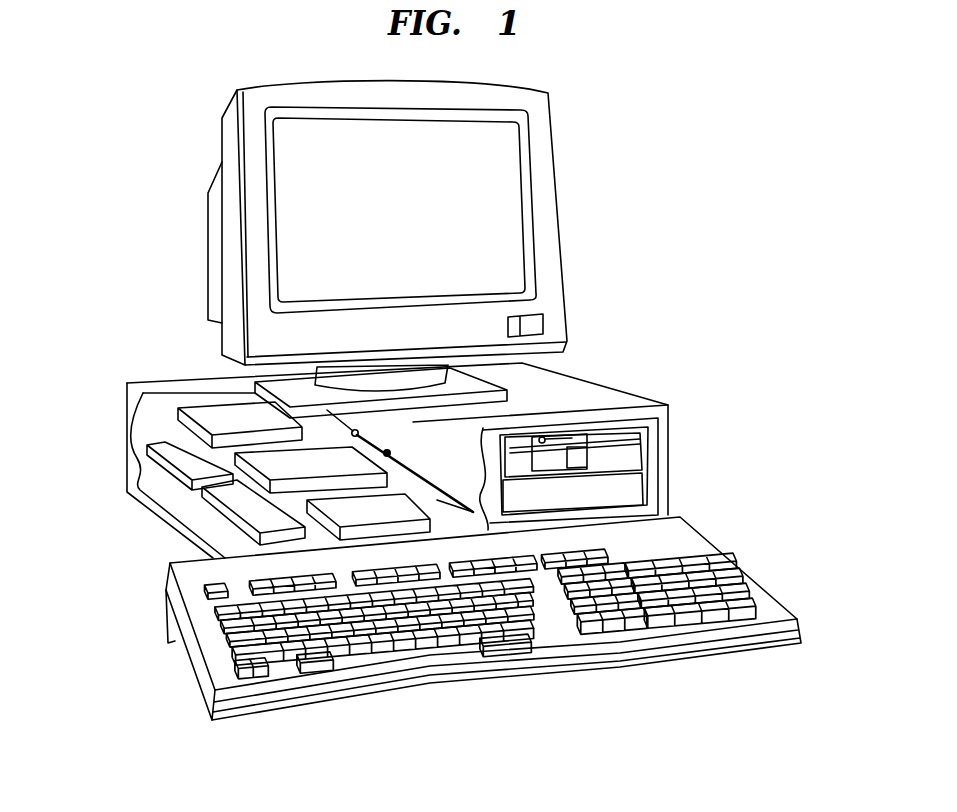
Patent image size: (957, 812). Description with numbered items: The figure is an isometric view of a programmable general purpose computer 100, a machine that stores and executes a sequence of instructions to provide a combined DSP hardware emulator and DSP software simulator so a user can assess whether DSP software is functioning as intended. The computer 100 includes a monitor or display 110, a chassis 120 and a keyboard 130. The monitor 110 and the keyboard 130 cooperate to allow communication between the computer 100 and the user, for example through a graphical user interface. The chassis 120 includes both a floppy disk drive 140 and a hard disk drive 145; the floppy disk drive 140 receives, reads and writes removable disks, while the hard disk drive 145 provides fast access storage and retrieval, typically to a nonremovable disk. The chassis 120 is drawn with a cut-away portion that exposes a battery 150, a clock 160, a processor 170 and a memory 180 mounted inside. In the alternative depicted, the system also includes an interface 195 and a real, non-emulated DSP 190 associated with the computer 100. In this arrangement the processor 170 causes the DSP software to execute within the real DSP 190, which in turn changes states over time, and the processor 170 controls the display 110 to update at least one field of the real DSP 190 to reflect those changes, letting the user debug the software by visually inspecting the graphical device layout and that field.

The programmable general purpose computer 100 is at (676, 233).
The monitor 110 is at (554, 172).
The chassis 120 is at (640, 395).
The keyboard 130 is at (728, 558).
The floppy disk drive 140 is at (628, 458).
The hard disk drive 145 is at (615, 492).
The battery 150 is at (222, 507).
The clock 160 is at (147, 447).
The processor 170 is at (402, 500).
The memory 180 is at (235, 453).
The real DSP 190 is at (218, 403).
The interface 195 is at (358, 433).